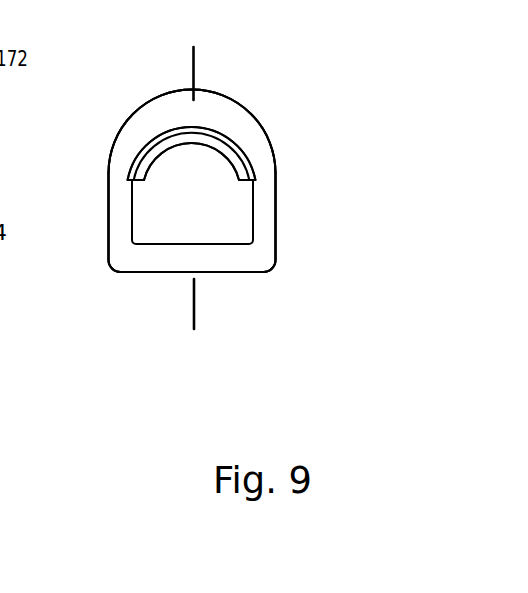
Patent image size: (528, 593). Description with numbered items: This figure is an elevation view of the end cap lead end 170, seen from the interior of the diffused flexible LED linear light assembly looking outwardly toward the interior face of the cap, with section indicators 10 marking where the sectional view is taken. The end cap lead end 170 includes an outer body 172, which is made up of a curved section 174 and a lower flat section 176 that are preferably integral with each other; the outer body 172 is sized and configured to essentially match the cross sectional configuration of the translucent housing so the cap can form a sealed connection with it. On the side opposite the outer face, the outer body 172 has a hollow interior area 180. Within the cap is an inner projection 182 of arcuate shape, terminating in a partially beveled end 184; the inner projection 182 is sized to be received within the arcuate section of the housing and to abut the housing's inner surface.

The section line indicator 10 is at (214, 70).
The end cap lead end 170 is at (350, 117).
The outer body 172 is at (292, 203).
The curved section 174 is at (130, 118).
The lower flat section 176 is at (243, 260).
The hollow interior area 180 is at (160, 217).
The inner projection 182 is at (147, 159).
The partially beveled end 184 is at (200, 128).